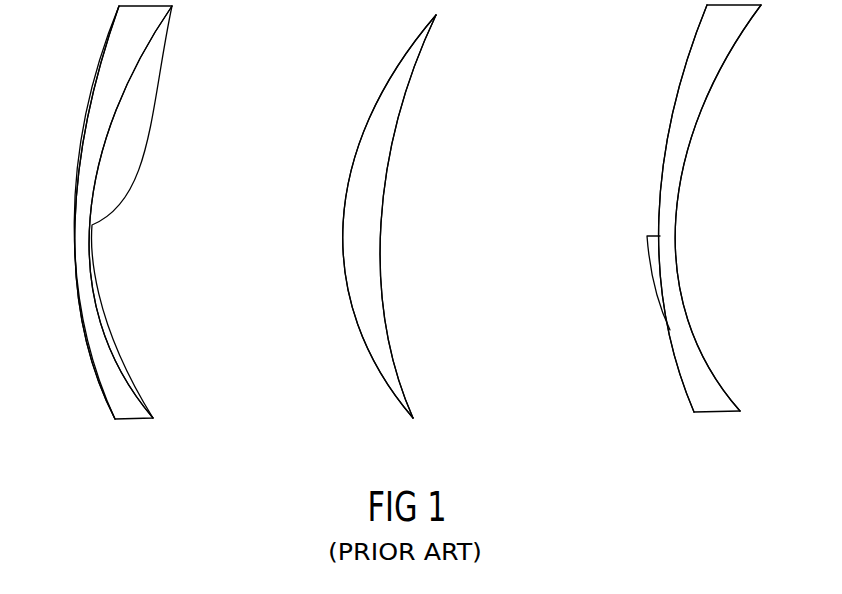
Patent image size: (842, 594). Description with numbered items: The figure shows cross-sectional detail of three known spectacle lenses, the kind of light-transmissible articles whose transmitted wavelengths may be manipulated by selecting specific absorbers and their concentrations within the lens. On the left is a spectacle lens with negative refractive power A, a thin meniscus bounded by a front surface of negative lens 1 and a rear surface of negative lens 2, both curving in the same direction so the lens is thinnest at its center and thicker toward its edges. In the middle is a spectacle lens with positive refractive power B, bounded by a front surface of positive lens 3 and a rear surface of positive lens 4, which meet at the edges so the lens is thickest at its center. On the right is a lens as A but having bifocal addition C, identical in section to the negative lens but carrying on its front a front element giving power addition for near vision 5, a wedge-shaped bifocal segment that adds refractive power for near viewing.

The front surface of negative lens 1 is at (83, 141).
The rear surface of negative lens 2 is at (93, 205).
The front surface of positive lens 3 is at (343, 210).
The rear surface of positive lens 4 is at (387, 187).
The front element giving power addition for near vision 5 is at (647, 260).
The spectacle lens with negative refractive power A is at (112, 384).
The spectacle lens with positive refractive power B is at (388, 370).
The lens as A having bifocal addition C is at (697, 382).